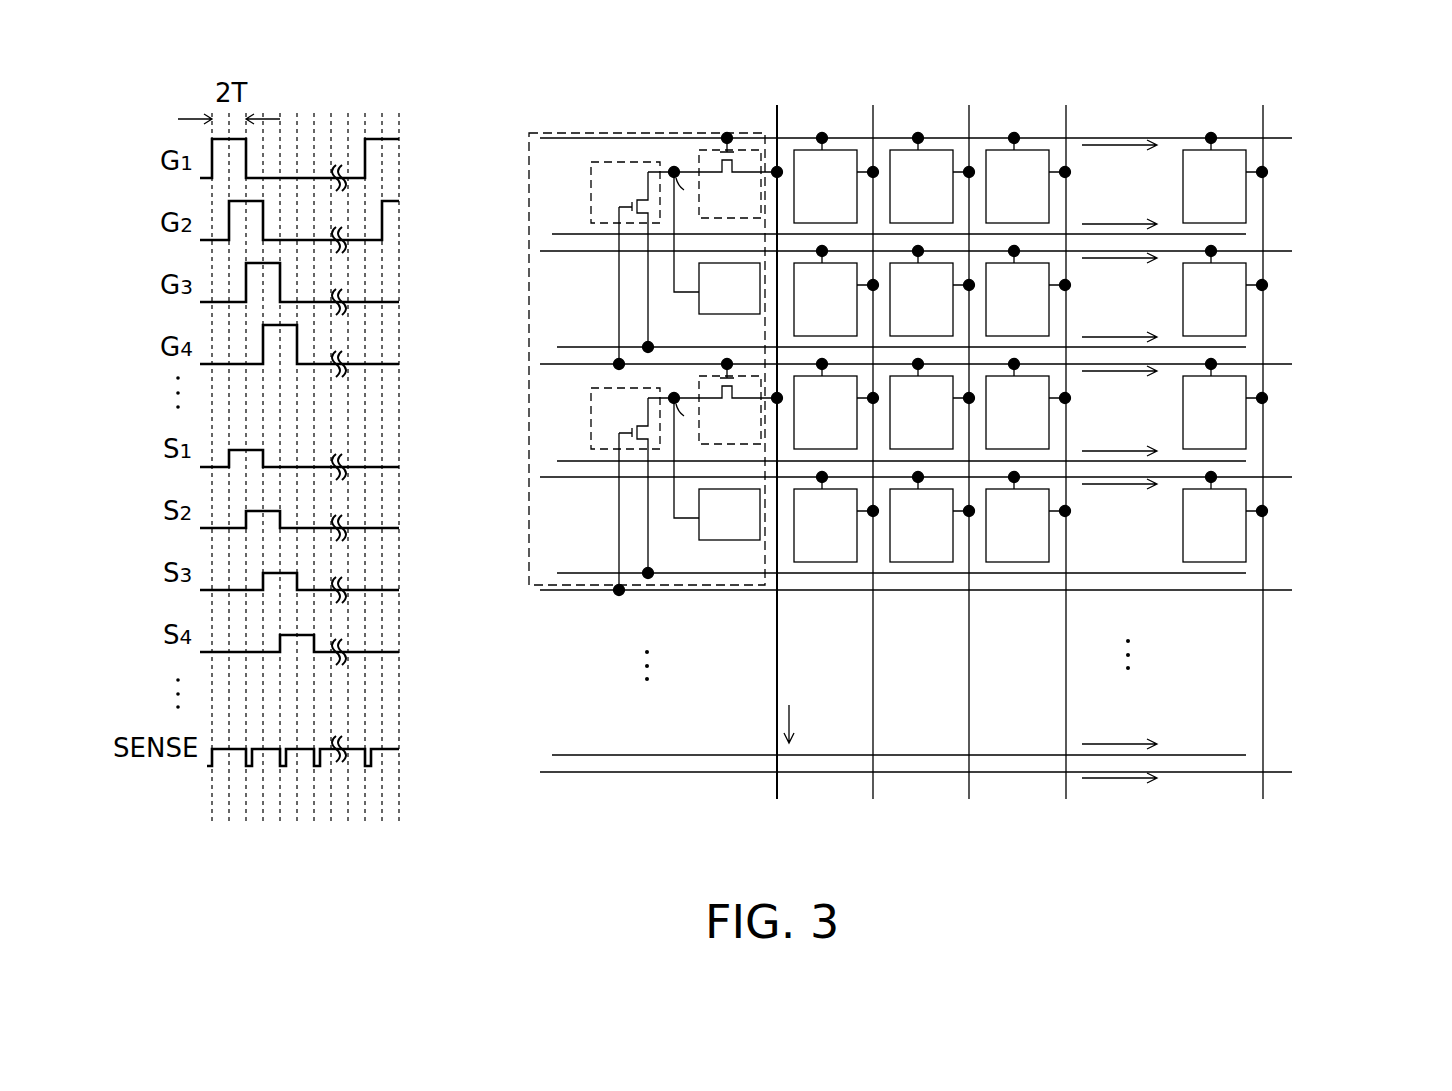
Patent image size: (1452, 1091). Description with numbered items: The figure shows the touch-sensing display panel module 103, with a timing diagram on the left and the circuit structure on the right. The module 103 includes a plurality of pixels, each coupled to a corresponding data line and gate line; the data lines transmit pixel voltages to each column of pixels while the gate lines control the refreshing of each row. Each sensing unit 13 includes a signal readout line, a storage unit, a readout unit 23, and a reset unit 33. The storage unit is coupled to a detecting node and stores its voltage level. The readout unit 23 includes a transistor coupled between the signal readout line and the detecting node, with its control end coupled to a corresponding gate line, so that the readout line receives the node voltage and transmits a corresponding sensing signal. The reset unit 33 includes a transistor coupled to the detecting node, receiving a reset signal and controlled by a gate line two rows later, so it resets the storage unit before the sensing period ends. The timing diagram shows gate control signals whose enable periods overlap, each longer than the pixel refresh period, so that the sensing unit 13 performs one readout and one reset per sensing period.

The sensing unit 13 is at (665, 132).
The readout unit 23 is at (699, 151).
The reset unit 33 is at (591, 218).
The touch-sensing display panel module 103 is at (1357, 105).